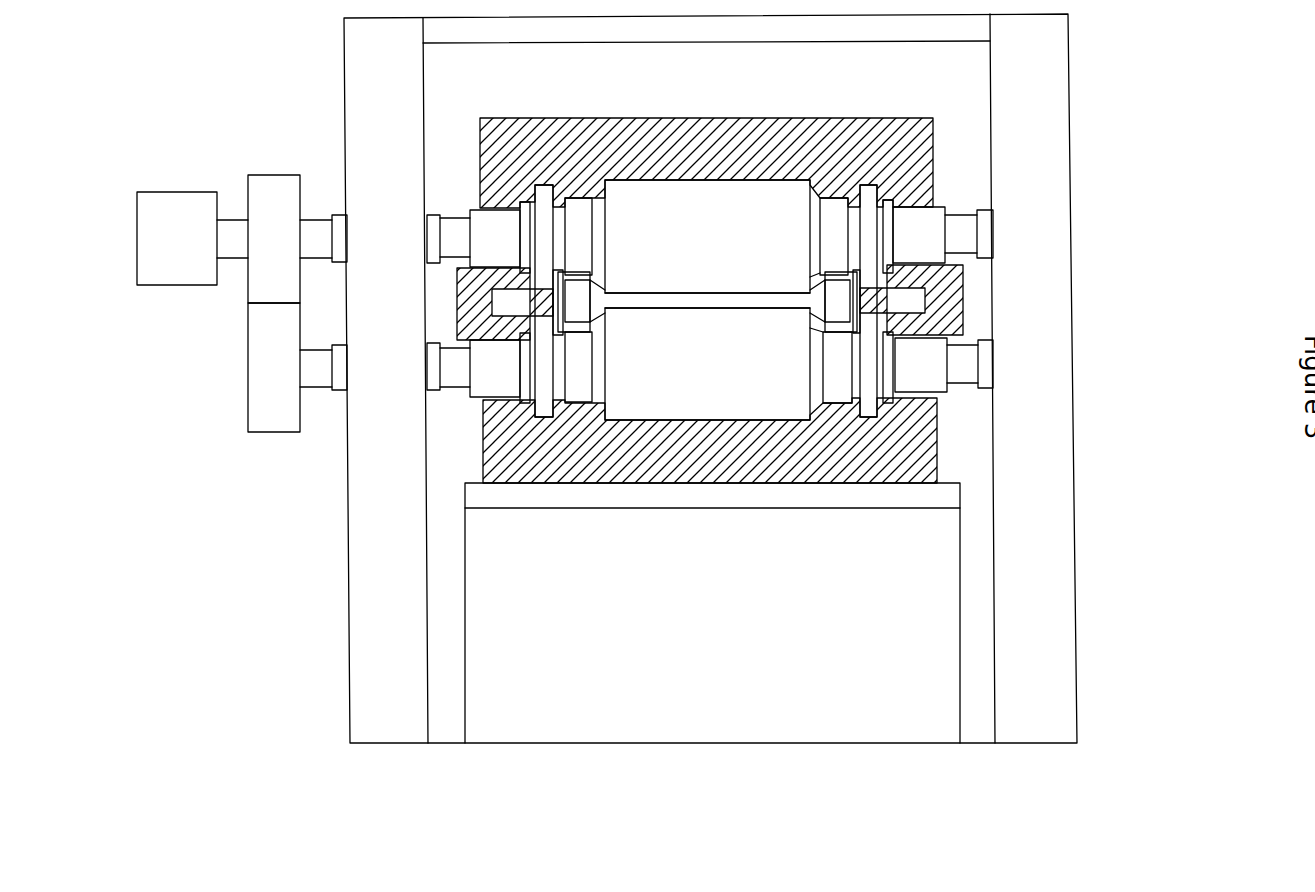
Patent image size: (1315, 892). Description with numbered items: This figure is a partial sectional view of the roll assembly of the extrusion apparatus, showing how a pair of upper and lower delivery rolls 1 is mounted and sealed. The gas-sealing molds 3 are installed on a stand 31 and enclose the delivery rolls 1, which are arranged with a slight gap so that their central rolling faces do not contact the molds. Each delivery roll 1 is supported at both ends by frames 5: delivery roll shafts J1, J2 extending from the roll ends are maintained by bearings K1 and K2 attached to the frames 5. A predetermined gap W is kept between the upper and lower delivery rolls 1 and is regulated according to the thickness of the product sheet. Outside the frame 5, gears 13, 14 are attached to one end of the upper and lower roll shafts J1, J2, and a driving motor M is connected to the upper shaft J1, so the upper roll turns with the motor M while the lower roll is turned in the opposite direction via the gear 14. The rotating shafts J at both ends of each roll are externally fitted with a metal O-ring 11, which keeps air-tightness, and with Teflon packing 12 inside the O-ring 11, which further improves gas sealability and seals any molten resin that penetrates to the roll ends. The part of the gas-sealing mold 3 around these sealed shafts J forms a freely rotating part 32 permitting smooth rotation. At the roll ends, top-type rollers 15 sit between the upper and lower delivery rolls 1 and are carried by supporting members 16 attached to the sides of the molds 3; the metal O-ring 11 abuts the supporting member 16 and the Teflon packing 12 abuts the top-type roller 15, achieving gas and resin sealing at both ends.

The delivery roll 1 is at (770, 188).
The gas-sealing mold 3 is at (705, 118).
The frame 5 is at (360, 46).
The metal O-ring 11 is at (527, 222).
The Teflon packing 12 is at (545, 198).
The gear 13 is at (275, 188).
The gear 14 is at (268, 393).
The top-type roller 15 is at (577, 298).
The supporting member 16 is at (465, 303).
The stand 31 is at (945, 584).
The freely rotating part 32 is at (515, 400).
The driving motor M is at (178, 228).
The bearing K1 is at (338, 227).
The bearing K2 is at (342, 382).
The rotating shaft J is at (475, 220).
The delivery roll shaft J1 is at (457, 235).
The delivery roll shaft J2 is at (460, 373).
The gap W is at (735, 300).